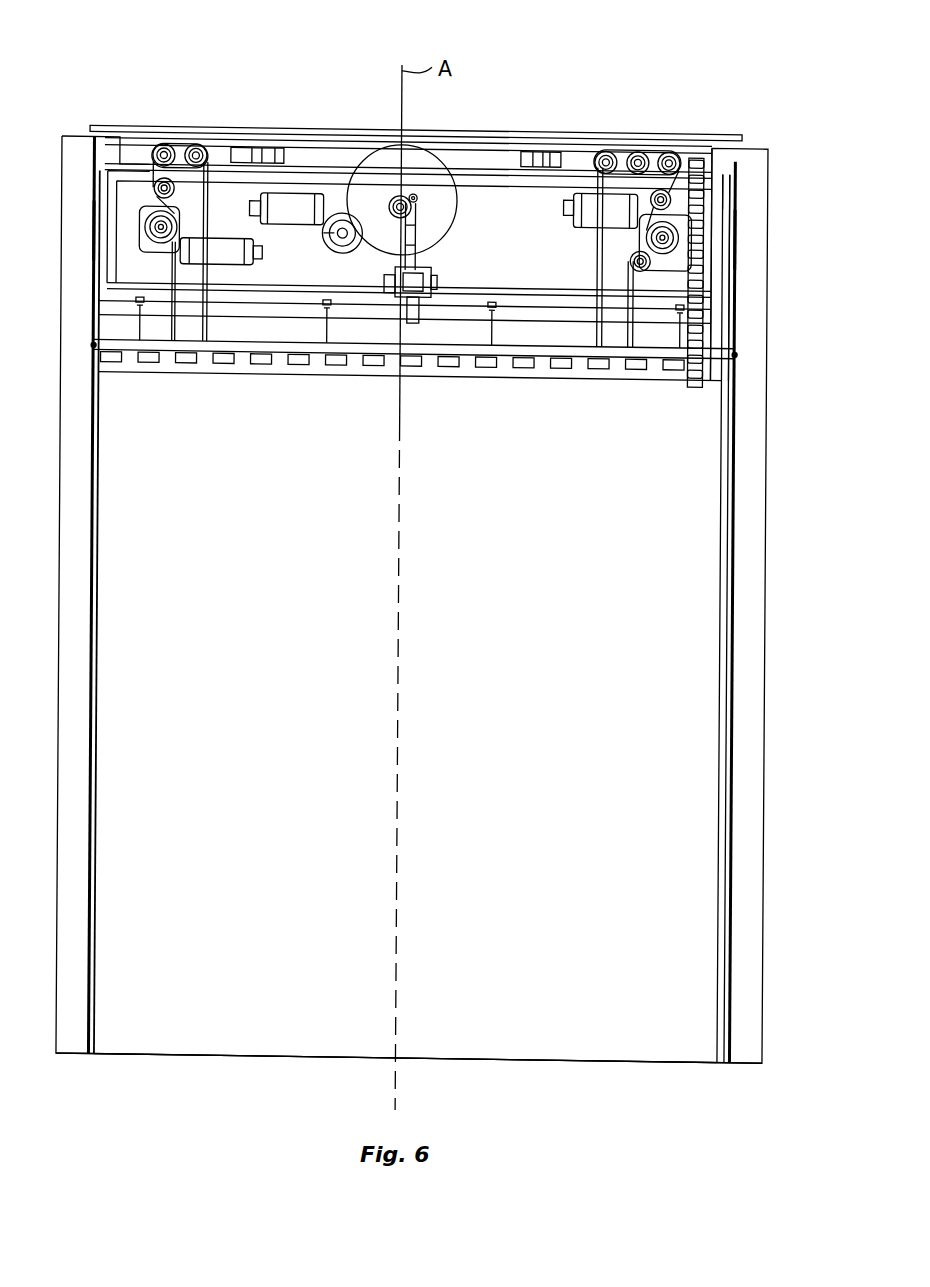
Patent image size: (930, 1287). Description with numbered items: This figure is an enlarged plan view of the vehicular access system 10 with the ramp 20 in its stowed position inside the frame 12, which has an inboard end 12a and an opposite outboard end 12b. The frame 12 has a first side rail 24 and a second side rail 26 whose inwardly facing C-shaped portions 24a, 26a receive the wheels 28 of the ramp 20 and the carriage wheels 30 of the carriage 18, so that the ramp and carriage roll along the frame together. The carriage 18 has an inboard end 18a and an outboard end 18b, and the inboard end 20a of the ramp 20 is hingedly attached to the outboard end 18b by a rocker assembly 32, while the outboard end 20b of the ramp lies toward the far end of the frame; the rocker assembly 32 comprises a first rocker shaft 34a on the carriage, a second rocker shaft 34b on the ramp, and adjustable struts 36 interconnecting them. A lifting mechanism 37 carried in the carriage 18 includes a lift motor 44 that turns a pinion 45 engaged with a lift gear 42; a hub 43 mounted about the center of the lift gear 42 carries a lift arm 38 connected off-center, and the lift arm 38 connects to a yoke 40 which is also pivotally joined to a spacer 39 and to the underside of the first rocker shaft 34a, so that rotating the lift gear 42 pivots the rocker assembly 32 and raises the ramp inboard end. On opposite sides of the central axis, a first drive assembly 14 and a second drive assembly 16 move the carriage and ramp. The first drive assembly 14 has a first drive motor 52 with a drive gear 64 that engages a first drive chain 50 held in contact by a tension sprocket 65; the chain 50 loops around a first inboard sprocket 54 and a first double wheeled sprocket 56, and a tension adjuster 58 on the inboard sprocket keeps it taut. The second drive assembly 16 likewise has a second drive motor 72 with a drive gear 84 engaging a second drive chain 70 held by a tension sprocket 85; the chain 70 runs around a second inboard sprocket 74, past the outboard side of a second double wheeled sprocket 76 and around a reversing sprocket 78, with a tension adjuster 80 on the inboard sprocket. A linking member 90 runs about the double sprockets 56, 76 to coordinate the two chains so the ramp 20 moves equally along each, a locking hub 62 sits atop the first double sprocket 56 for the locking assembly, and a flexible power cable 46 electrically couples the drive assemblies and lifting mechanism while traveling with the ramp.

The vehicular access system 10 is at (76, 55).
The frame 12 is at (62, 425).
The inboard end 12a is at (338, 126).
The outboard end 12b is at (751, 1056).
The first drive assembly 14 is at (227, 332).
The second drive assembly 16 is at (597, 270).
The carriage 18 is at (104, 270).
The inboard end 18a is at (714, 162).
The outboard end 18b is at (723, 290).
The ramp 20 is at (452, 720).
The inboard end 20a is at (439, 360).
The outboard end 20b is at (269, 1052).
The first side rail 24 is at (66, 680).
The C-shaped portion 24a is at (102, 594).
The second side rail 26 is at (769, 696).
The C-shaped portion 26a is at (723, 636).
The wheels 28 is at (95, 344).
The carriage wheels 30 is at (93, 226).
The rocker assembly 32 is at (259, 324).
The first rocker shaft 34a is at (565, 308).
The second rocker shaft 34b is at (354, 345).
The struts 36 is at (152, 334).
The lifting mechanism 37 is at (353, 254).
The lift arm 38 is at (419, 230).
The spacer 39 is at (441, 260).
The yoke 40 is at (441, 284).
The lift gear 42 is at (455, 194).
The hub 43 is at (410, 154).
The lift motor 44 is at (262, 202).
The pinion 45 is at (326, 236).
The power cable 46 is at (703, 273).
The first drive chain 50 is at (207, 333).
The first drive motor 52 is at (234, 242).
The first inboard sprocket 54 is at (194, 143).
The first double wheeled sprocket 56 is at (157, 143).
The tension adjuster 58 is at (260, 137).
The locking hub 62 is at (150, 150).
The drive gear 64 is at (148, 227).
The tension sprocket 65 is at (152, 188).
The second drive chain 70 is at (629, 327).
The second drive motor 72 is at (582, 244).
The second inboard sprocket 74 is at (603, 140).
The second double wheeled sprocket 76 is at (637, 140).
The reversing sprocket 78 is at (670, 139).
The tension adjuster 80 is at (540, 143).
The drive gear 84 is at (668, 234).
The tension sprocket 85 is at (668, 198).
The linking member 90 is at (466, 134).